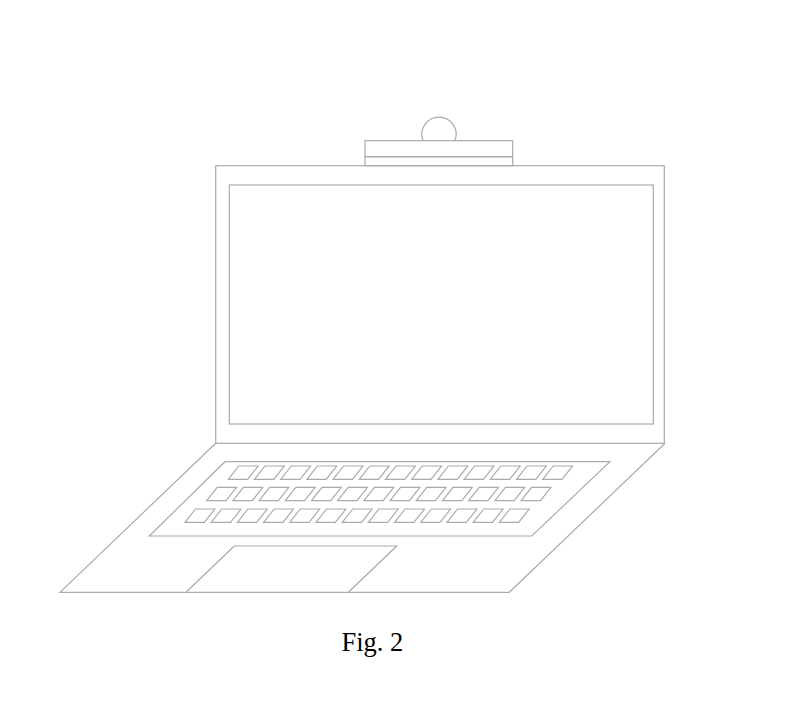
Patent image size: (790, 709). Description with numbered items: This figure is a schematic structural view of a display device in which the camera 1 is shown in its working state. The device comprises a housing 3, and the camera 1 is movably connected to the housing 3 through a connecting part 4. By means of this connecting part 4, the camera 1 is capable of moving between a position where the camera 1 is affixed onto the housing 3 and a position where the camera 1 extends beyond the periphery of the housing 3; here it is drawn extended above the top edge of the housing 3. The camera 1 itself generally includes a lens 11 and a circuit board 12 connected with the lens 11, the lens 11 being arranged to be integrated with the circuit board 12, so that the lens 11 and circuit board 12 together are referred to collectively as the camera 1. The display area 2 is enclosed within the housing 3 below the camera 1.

The camera 1 is at (439, 84).
The display screen 2 is at (519, 243).
The housing 3 is at (302, 174).
The connecting part 4 is at (484, 162).
The lens 11 is at (435, 135).
The circuit board 12 is at (375, 150).